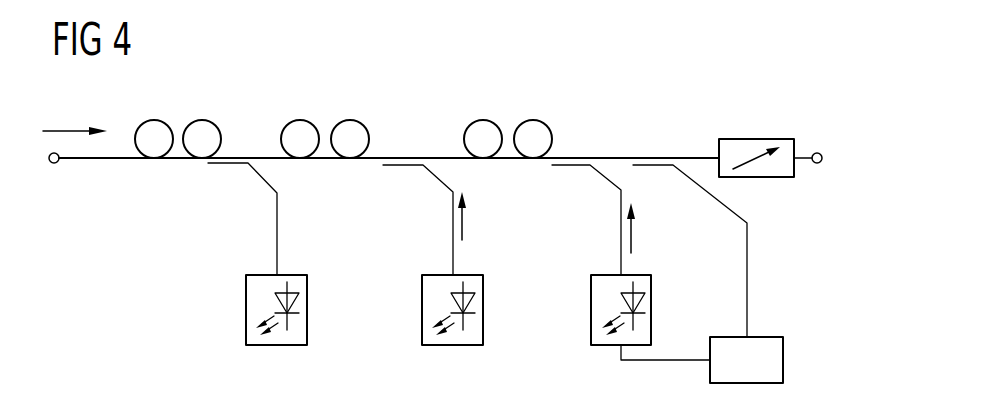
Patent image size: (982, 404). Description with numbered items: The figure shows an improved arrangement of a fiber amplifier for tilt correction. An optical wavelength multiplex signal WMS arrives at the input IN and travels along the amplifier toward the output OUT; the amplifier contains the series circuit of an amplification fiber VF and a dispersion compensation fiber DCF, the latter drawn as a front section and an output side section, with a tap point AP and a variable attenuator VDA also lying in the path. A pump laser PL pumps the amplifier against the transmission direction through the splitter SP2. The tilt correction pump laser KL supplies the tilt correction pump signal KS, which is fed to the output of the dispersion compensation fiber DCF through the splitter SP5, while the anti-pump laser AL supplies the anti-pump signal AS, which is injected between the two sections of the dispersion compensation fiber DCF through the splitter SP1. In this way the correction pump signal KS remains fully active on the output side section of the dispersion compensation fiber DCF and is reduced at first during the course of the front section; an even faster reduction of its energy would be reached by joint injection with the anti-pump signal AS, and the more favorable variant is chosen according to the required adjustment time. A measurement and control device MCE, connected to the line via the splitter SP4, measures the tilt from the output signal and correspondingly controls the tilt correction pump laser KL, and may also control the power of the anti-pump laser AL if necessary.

The input IN is at (58, 174).
The optical wavelength multiplex signal WMS is at (75, 115).
The amplification fiber VF is at (178, 126).
The dispersion compensation fiber DCF is at (419, 121).
The tap point AP is at (405, 157).
The splitter SP1 is at (415, 220).
The splitter SP2 is at (241, 219).
The splice / coupler 4 SP4 is at (690, 251).
The splitter SP5 is at (583, 220).
The anti-pump signal AS is at (475, 216).
The tilt correction pump signal KS is at (646, 228).
The variable attenuator VDA is at (756, 142).
The output OUT is at (834, 158).
The pump laser PL is at (246, 300).
The anti-pump laser AL is at (422, 300).
The tilt correction pump laser KL is at (591, 303).
The measurement and control device MCE is at (702, 360).